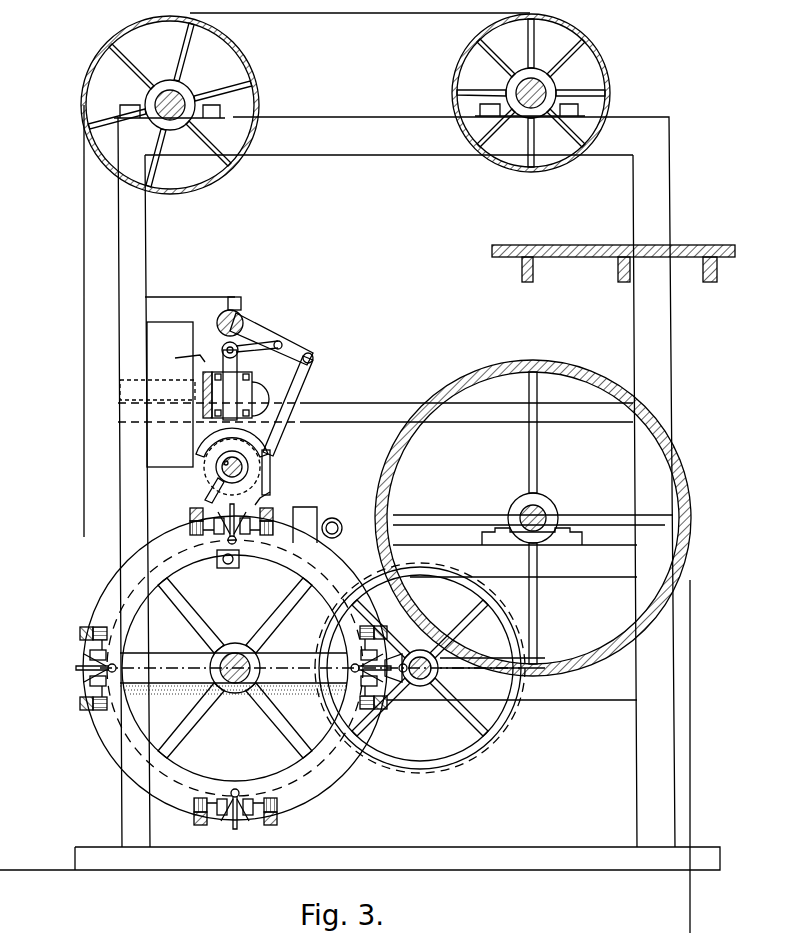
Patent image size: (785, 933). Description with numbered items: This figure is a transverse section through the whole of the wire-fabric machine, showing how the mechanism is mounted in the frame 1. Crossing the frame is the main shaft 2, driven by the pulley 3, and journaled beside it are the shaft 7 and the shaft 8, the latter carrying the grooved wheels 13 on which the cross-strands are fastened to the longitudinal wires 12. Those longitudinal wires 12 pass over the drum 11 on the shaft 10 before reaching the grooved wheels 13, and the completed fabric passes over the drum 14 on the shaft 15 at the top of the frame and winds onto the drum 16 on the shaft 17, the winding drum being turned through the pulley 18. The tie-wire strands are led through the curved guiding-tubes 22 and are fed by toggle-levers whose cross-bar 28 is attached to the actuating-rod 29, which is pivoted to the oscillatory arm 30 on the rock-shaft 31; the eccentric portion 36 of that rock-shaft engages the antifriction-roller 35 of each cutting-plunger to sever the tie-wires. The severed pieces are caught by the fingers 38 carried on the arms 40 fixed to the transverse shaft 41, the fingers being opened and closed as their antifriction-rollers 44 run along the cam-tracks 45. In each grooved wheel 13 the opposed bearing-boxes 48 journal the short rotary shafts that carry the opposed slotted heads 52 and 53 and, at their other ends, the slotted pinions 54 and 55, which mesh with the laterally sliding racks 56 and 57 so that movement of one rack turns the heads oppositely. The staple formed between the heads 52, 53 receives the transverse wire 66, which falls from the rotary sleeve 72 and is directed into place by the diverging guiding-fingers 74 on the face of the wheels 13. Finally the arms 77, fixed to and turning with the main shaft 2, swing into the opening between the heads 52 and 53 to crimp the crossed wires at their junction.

The frame 1 is at (145, 268).
The main shaft 2 is at (424, 690).
The pulley 3 is at (497, 728).
The shaft 7 is at (541, 512).
The shaft 8 is at (236, 645).
The shaft 10 is at (378, 527).
The drum 11 is at (418, 433).
The longitudinal wires 12 is at (691, 690).
The grooved wheels 13 is at (202, 781).
The drum 14 is at (222, 31).
The shaft 15 is at (169, 80).
The drum 16 is at (495, 20).
The shaft 17 is at (537, 78).
The pulley 18 is at (232, 463).
The curved guiding-tubes 22 is at (255, 392).
The cross-bar 28 is at (180, 362).
The actuating-rod 29 is at (250, 350).
The oscillatory arm 30 is at (299, 348).
The rock-shaft 31 is at (222, 318).
The antifriction-roller 35 is at (223, 347).
The eccentric portion 36 is at (243, 325).
The fingers 38 is at (266, 481).
The arms 40 is at (215, 486).
The transverse shaft 41 is at (226, 463).
The antifriction-rollers 44 is at (272, 493).
The cam-tracks 45 is at (276, 448).
The bearing-boxes 48 is at (233, 663).
The slotted head 52 is at (255, 514).
The slotted head 53 is at (218, 516).
The slotted pinion 54 is at (190, 516).
The slotted pinion 55 is at (273, 515).
The movable rack 56 is at (250, 545).
The movable rack 57 is at (190, 532).
The transverse wire 66 is at (342, 526).
The rotary sleeve 72 is at (334, 520).
The guiding-fingers 74 is at (80, 666).
The arms 77 is at (405, 680).